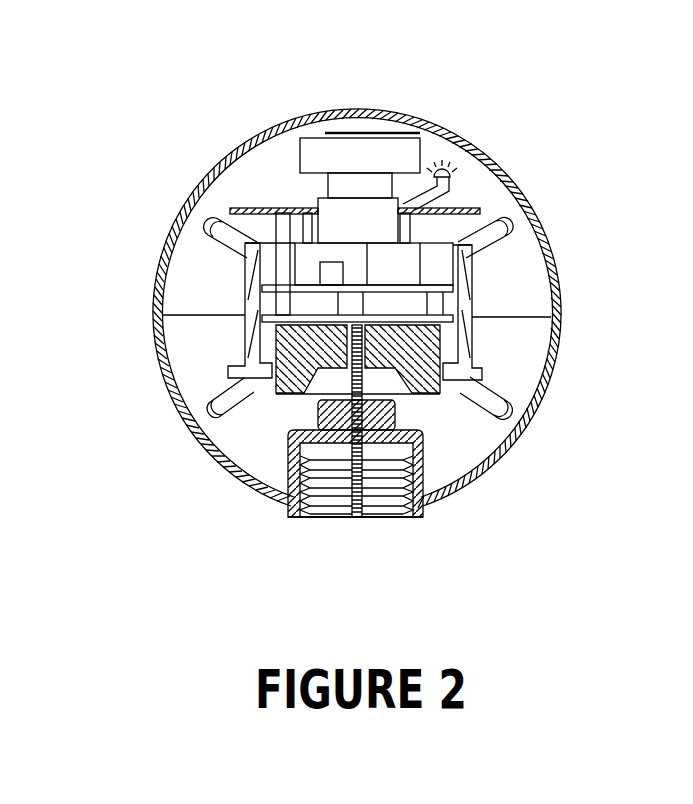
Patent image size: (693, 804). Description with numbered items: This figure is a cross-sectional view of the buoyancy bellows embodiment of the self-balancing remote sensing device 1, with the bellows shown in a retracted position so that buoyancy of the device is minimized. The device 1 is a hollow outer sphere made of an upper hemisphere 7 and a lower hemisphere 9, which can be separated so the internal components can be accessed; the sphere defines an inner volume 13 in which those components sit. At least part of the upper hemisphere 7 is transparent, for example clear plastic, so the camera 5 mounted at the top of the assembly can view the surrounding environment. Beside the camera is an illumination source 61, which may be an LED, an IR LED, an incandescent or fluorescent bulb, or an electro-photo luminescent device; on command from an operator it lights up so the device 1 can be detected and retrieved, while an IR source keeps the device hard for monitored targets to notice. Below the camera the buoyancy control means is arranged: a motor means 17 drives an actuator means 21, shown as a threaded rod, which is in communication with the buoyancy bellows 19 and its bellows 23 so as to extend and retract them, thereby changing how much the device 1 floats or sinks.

The self-balancing remote sensing device 1 is at (597, 122).
The camera 5 is at (345, 157).
The upper hemisphere 7 is at (178, 220).
The lower hemisphere 9 is at (155, 350).
The inner volume 13 is at (517, 345).
The motor means 17 is at (318, 421).
The buoyancy bellows 19 is at (385, 517).
The actuator means 21 is at (395, 407).
The bellows 23 is at (325, 490).
The illumination source 61 is at (455, 157).